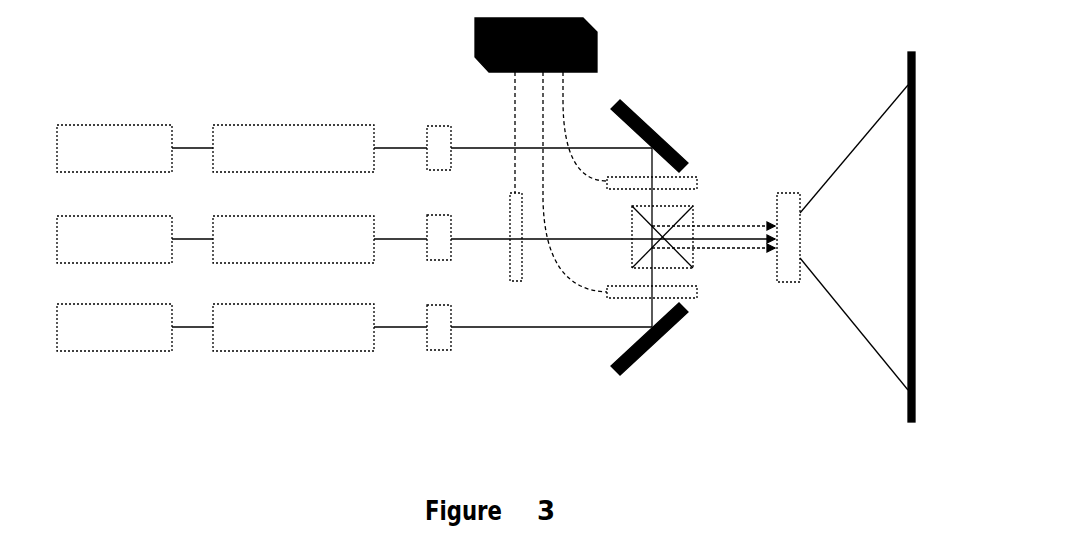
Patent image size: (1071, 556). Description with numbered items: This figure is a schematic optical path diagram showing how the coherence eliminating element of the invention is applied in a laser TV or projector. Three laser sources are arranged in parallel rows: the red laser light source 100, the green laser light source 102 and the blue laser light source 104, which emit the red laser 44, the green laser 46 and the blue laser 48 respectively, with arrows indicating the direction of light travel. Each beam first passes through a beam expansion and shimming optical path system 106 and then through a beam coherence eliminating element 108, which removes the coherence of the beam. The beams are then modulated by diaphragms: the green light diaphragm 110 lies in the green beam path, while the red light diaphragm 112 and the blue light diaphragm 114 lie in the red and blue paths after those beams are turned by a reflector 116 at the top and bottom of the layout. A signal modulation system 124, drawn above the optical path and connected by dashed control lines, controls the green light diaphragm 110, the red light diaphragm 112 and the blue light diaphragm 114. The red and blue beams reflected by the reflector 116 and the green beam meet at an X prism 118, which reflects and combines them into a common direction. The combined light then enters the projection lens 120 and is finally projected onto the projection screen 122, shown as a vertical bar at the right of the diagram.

The red laser light source 100 is at (114, 148).
The green laser light source 102 is at (114, 239).
The blue laser light source 104 is at (114, 327).
The beam expansion and shimming optical path system 106 is at (293, 238).
The beam coherence eliminating element 108 is at (440, 225).
The green light diaphragm 110 is at (514, 250).
The red light diaphragm 112 is at (673, 184).
The blue light diaphragm 114 is at (673, 294).
The reflector 116 is at (658, 237).
The X prism 118 is at (683, 246).
The projection lens 120 is at (787, 224).
The projection screen 122 is at (890, 235).
The signal modulation system 124 is at (541, 155).
The red laser 44 is at (551, 163).
The green laser 46 is at (613, 226).
The blue laser 48 is at (551, 298).